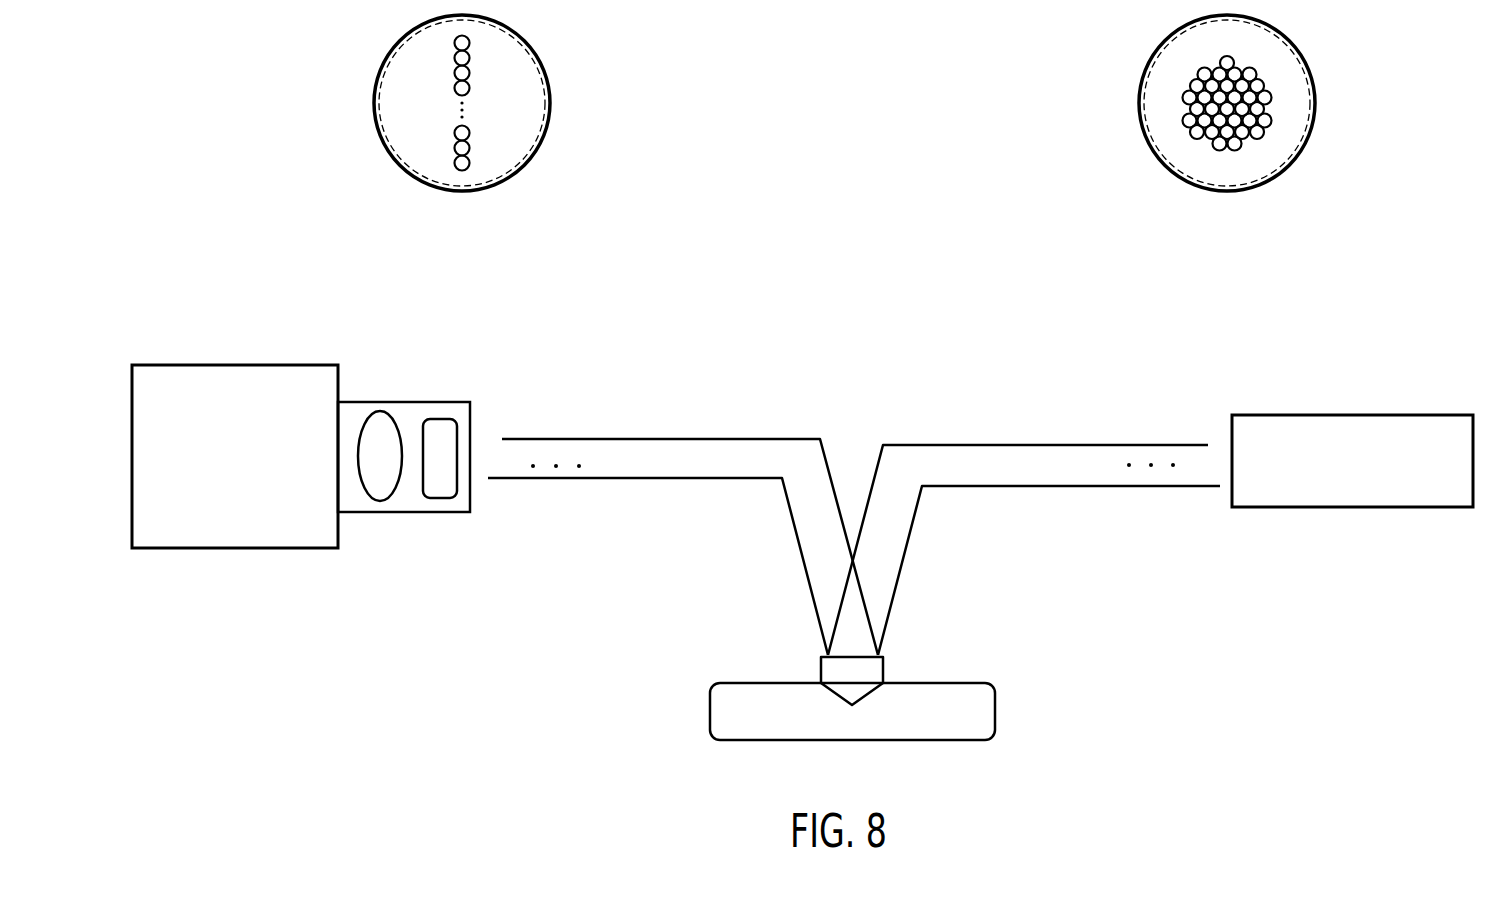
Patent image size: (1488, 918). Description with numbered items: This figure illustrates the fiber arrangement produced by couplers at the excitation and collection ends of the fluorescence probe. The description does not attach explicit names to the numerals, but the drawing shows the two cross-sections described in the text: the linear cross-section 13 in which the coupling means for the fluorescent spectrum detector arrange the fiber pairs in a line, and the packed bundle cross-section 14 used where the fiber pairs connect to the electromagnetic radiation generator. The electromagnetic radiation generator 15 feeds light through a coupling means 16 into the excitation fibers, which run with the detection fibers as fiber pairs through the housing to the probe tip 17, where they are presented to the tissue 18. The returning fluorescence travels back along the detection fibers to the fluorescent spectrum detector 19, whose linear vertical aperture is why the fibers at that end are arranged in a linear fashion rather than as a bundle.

The linear fiber bundle cross-section 13 is at (534, 153).
The circular fiber bundle cross-section 14 is at (1299, 153).
The light source unit 15 is at (307, 548).
The lens/coupling unit 16 is at (470, 502).
The probe head 17 is at (883, 675).
The sample / skin 18 is at (957, 740).
The detector / spectrometer 19 is at (1245, 507).